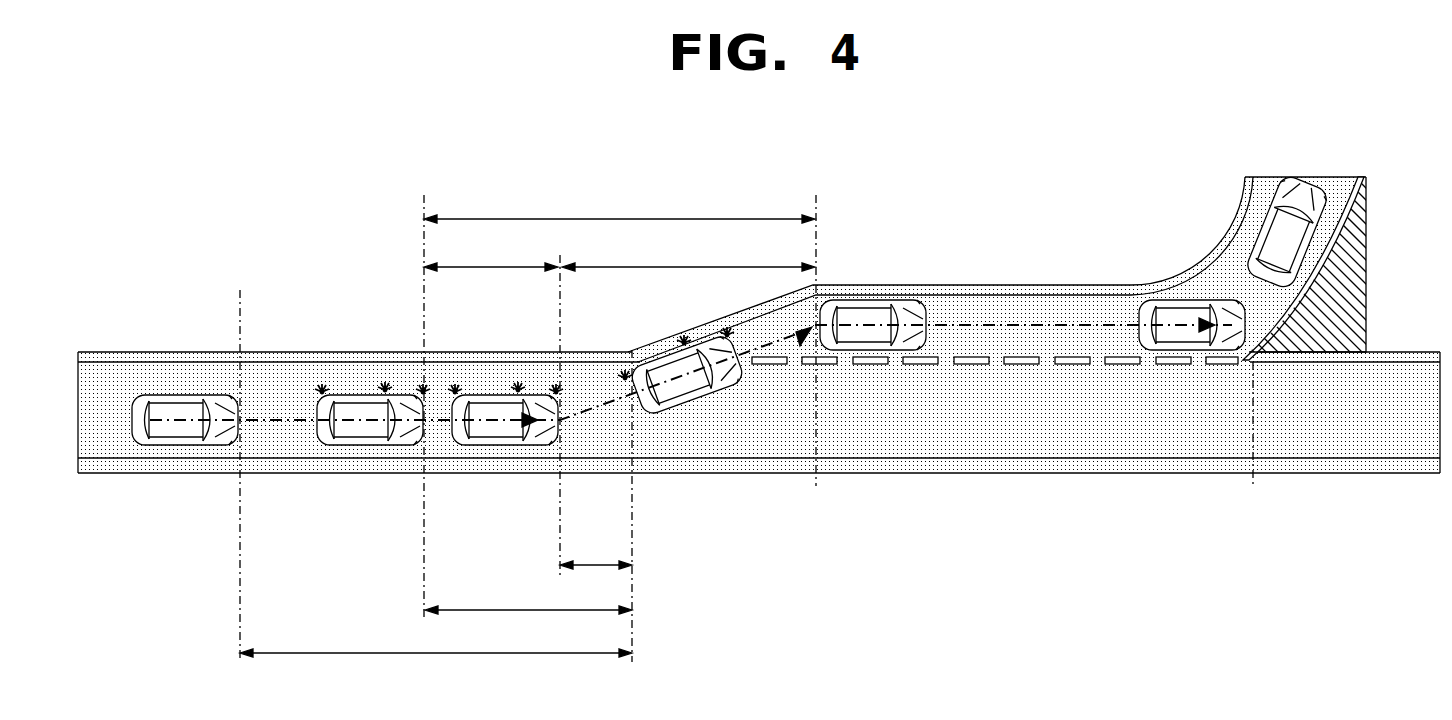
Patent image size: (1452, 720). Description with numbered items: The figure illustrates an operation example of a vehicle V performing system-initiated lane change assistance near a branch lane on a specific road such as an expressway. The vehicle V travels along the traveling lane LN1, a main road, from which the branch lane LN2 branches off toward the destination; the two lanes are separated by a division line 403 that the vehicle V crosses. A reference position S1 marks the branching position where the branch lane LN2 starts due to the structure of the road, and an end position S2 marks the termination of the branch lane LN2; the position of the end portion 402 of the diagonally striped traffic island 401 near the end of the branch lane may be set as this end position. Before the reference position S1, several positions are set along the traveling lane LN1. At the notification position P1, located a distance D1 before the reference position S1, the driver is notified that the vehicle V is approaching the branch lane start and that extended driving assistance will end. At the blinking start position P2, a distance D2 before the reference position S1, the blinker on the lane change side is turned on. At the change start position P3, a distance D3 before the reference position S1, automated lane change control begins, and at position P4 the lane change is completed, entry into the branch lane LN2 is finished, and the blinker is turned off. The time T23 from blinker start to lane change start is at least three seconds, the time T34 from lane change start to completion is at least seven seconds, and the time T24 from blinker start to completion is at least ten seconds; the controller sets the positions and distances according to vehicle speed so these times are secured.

The vehicle V is at (172, 412).
The zone with diagonal stripes 401 is at (1345, 305).
The end portion 402 is at (1252, 365).
The division line 403 is at (1060, 365).
The traveling lane LN1 is at (922, 452).
The branch lane LN2 is at (1028, 312).
The notification position P1 is at (239, 476).
The blinking start position P2 is at (424, 406).
The change start position P3 is at (559, 415).
The lane change completion position P4 is at (821, 354).
The reference position S1 is at (632, 506).
The end position S2 is at (1253, 438).
The time from blinker start to lane change start T23 is at (491, 253).
The time from blinker start to lane change completion T24 is at (619, 205).
The time from lane change start to completion T34 is at (688, 253).
The distance D1 is at (436, 639).
The distance D2 is at (528, 595).
The distance D3 is at (596, 550).